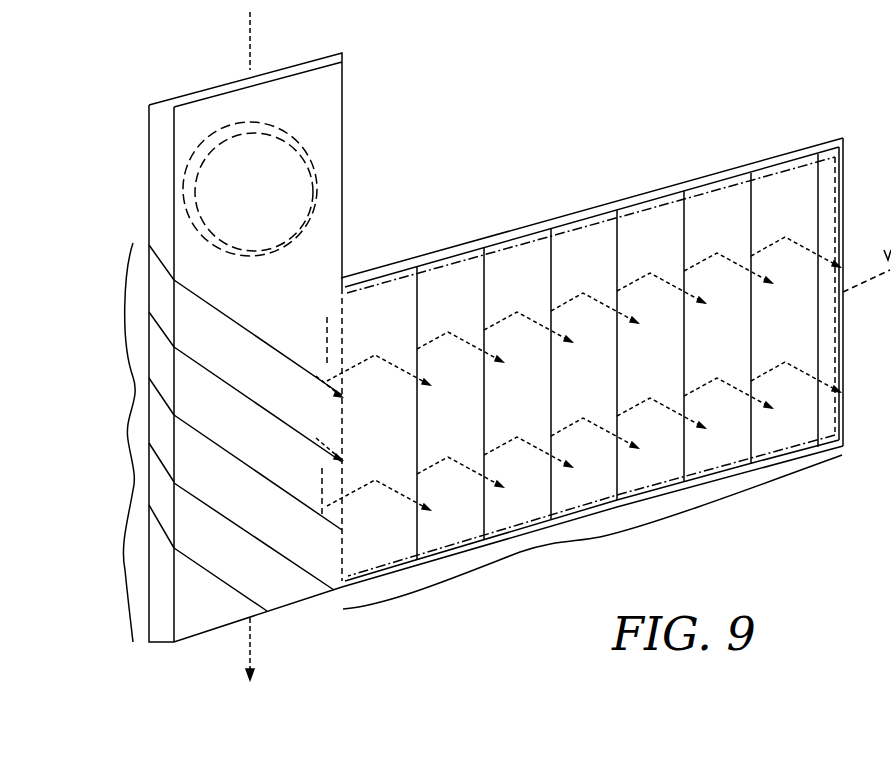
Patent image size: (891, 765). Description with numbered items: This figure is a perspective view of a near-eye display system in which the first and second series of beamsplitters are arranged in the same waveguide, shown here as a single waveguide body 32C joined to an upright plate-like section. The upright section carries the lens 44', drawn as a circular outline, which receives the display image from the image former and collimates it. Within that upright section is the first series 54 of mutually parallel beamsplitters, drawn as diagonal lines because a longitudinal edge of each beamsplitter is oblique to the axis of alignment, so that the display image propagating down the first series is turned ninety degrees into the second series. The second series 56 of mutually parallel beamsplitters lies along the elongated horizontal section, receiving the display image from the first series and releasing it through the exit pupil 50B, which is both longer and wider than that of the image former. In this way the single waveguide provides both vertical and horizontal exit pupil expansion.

The header edge 32C is at (343, 262).
The lens 44' is at (250, 189).
The exit pupil 50B is at (845, 193).
The first series of mutually parallel beamsplitters 54 is at (160, 440).
The second series of mutually parallel beamsplitters 56 is at (592, 532).